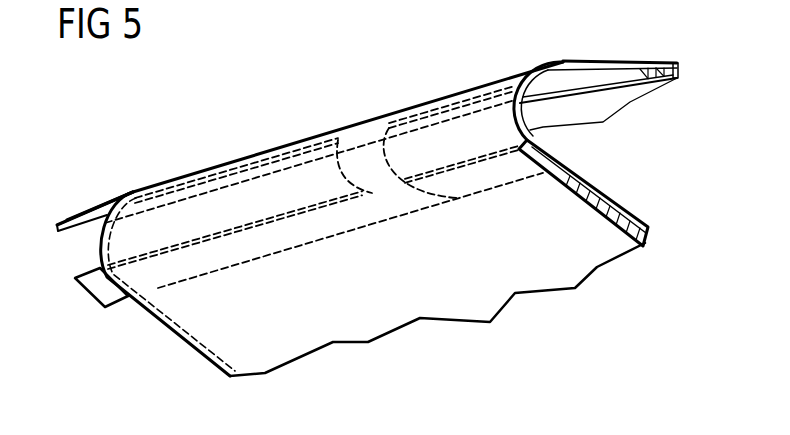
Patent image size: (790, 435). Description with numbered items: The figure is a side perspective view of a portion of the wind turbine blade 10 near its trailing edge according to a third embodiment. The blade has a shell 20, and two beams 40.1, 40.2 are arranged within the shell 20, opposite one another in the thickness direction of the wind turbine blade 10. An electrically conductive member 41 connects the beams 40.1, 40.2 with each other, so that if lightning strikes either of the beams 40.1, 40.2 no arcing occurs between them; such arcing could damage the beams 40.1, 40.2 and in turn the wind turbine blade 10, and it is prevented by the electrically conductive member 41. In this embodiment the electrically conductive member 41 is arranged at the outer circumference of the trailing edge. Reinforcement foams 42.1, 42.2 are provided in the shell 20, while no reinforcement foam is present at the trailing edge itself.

The wind turbine blade 10 is at (473, 75).
The shell 20 is at (283, 342).
The electrically conductive member 41 is at (363, 147).
The beam 40.1 is at (91, 207).
The beam 40.2 is at (116, 298).
The reinforcement foam 42.1 is at (654, 63).
The reinforcement foam 42.2 is at (647, 188).